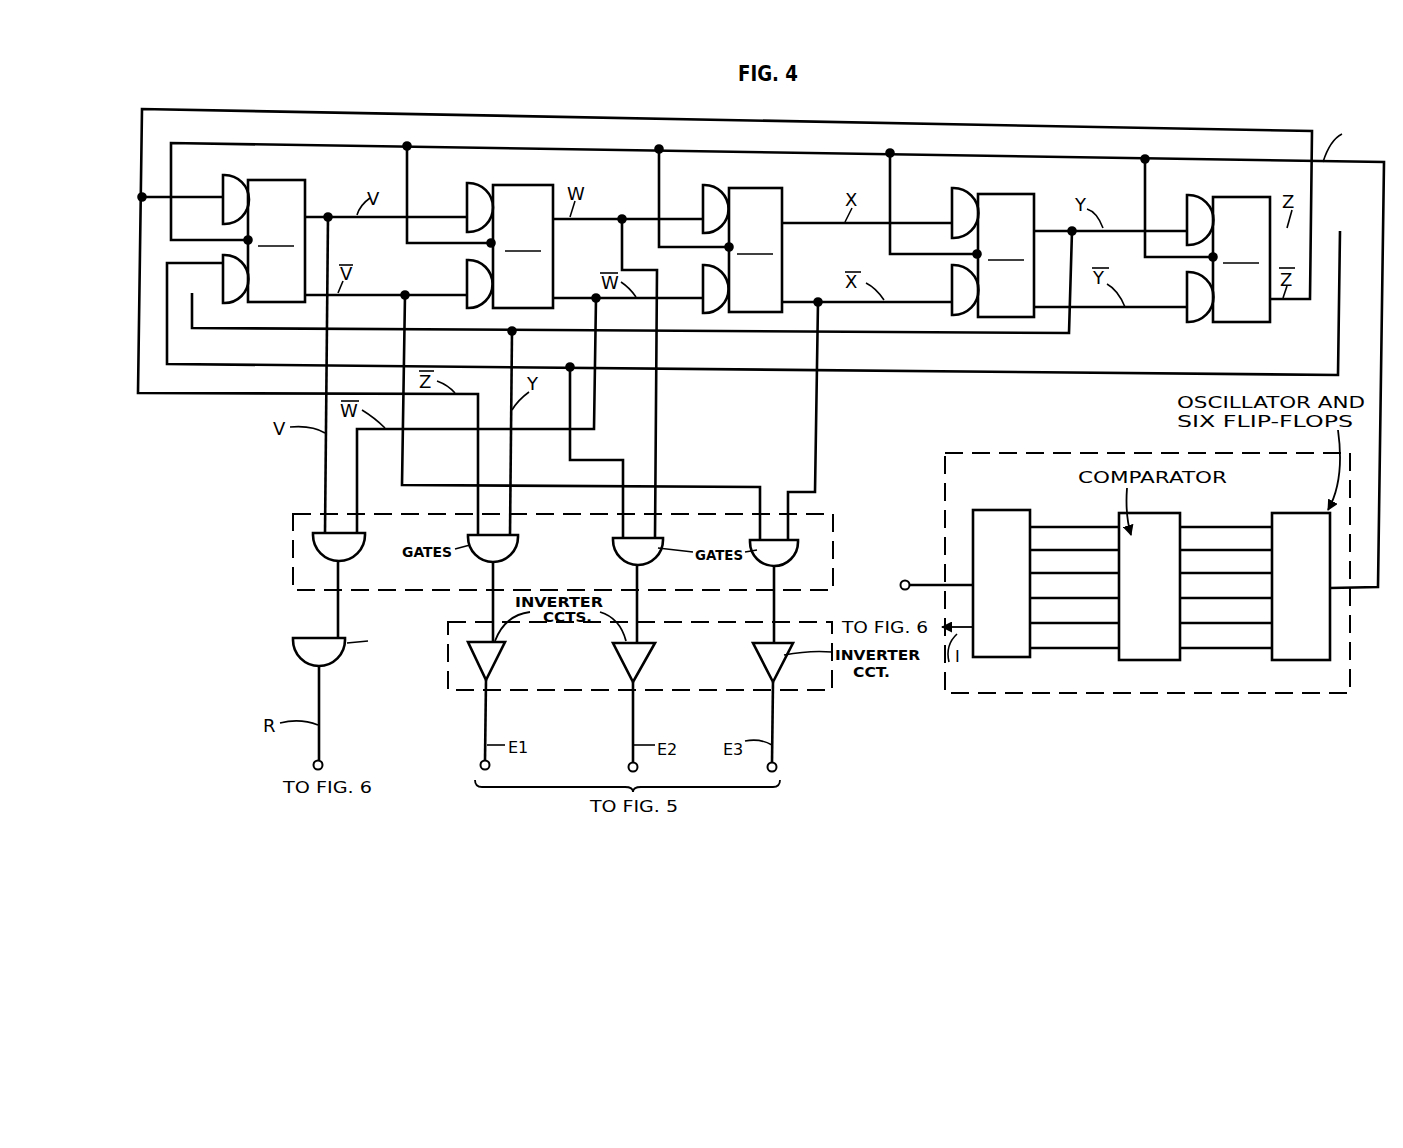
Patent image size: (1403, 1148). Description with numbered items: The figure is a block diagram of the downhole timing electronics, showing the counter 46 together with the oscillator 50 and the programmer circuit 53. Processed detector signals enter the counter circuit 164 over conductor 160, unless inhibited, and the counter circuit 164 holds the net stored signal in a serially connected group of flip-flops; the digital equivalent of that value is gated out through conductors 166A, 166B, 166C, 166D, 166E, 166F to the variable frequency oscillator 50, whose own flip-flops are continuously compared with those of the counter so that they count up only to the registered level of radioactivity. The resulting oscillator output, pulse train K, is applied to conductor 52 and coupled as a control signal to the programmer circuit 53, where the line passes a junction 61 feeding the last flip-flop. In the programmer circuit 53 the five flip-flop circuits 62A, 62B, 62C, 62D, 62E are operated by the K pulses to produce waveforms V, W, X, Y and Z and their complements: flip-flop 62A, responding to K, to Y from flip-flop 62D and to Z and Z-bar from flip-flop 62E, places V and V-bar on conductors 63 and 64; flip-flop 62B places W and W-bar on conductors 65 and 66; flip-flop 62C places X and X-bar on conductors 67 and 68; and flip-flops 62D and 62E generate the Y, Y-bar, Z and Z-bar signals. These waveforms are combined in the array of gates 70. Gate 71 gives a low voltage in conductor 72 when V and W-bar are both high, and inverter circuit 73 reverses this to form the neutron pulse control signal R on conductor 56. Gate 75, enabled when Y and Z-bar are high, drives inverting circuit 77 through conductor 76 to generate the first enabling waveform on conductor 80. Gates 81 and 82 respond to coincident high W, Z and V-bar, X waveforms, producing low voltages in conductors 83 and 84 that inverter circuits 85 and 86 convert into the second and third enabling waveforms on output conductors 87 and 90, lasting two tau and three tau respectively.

The counter 46 is at (1240, 699).
The oscillator 50 is at (1312, 541).
The conductor 52 is at (1340, 163).
The programmer circuit 53 is at (860, 703).
The conductor 56 is at (322, 690).
The junction of clock line to flip-flop 62E 61 is at (1143, 161).
The flip-flop circuit 62A is at (223, 239).
The flip-flop circuit 62B is at (510, 245).
The flip-flop circuit 62C is at (742, 249).
The flip-flop circuit 62D is at (993, 252).
The flip-flop circuit 62E is at (1228, 258).
The conductor 63 is at (329, 214).
The conductor 64 is at (403, 293).
The conductor 65 is at (622, 215).
The conductor 66 is at (595, 296).
The conductor 67 is at (803, 220).
The conductor 68 is at (796, 300).
The array of gates 70 is at (270, 556).
The gate 71 is at (363, 540).
The conductor 72 is at (340, 575).
The inverter circuit 73 is at (310, 652).
The gate 75 is at (517, 540).
The conductor 76 is at (495, 576).
The inverting circuit 77 is at (490, 663).
The conductor 80 is at (487, 698).
The gate 81 is at (658, 546).
The gate 82 is at (787, 548).
The conductor 83 is at (639, 578).
The conductor 84 is at (776, 580).
The inverter circuit 85 is at (645, 662).
The inverter circuit 86 is at (782, 658).
The output conductor 87 is at (633, 708).
The output conductor 90 is at (773, 708).
The conductor 160 is at (906, 580).
The counter circuit 164 is at (973, 521).
The conductor 166A is at (1237, 527).
The conductor 166B is at (1218, 548).
The conductor 166C is at (1245, 573).
The conductor 166D is at (1248, 598).
The conductor 166E is at (1245, 623).
The conductor 166F is at (1245, 648).